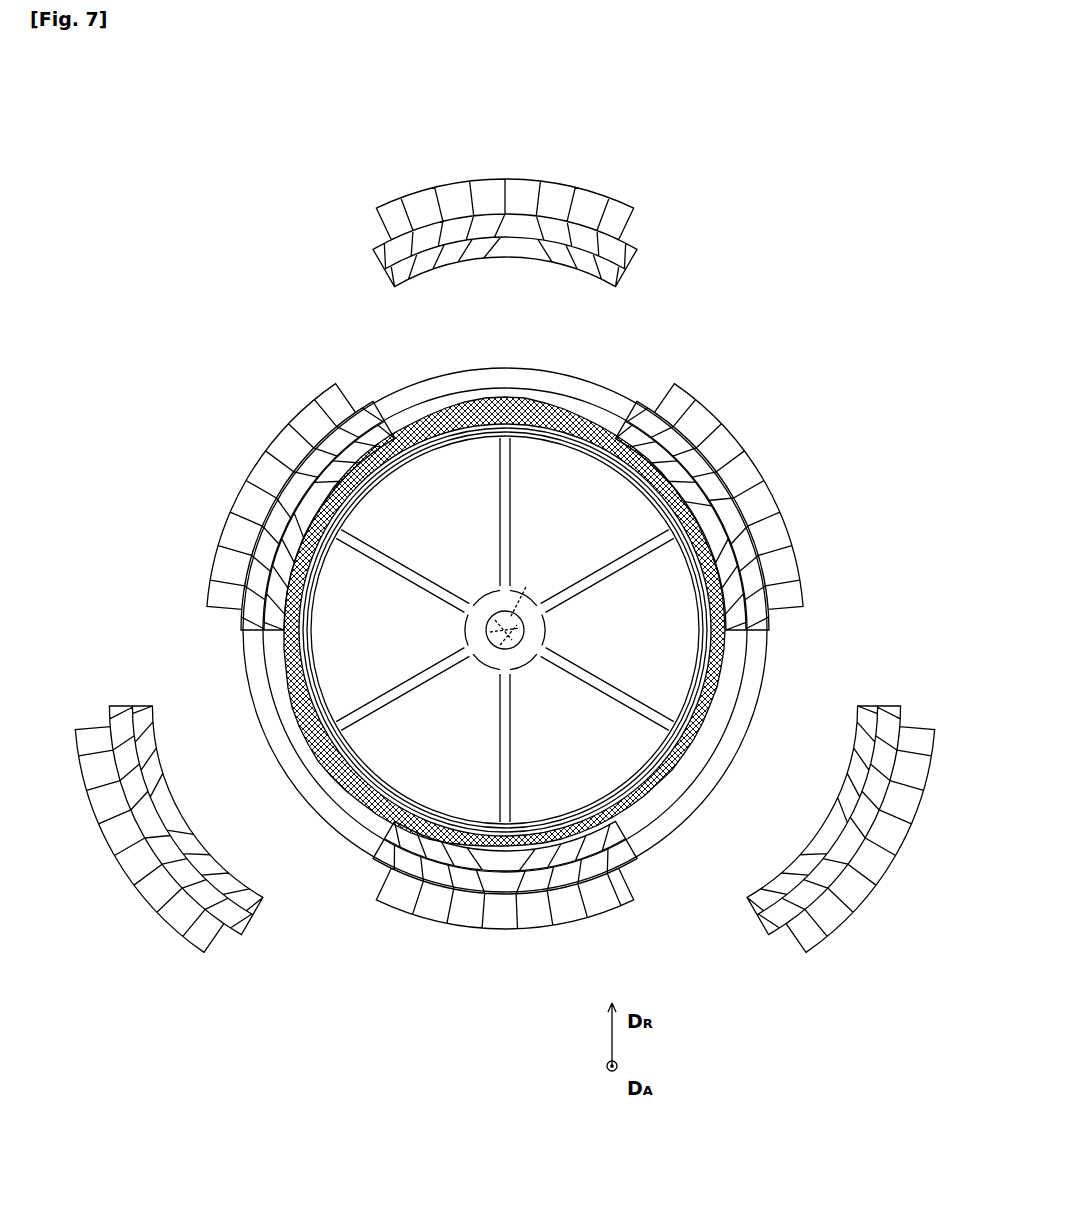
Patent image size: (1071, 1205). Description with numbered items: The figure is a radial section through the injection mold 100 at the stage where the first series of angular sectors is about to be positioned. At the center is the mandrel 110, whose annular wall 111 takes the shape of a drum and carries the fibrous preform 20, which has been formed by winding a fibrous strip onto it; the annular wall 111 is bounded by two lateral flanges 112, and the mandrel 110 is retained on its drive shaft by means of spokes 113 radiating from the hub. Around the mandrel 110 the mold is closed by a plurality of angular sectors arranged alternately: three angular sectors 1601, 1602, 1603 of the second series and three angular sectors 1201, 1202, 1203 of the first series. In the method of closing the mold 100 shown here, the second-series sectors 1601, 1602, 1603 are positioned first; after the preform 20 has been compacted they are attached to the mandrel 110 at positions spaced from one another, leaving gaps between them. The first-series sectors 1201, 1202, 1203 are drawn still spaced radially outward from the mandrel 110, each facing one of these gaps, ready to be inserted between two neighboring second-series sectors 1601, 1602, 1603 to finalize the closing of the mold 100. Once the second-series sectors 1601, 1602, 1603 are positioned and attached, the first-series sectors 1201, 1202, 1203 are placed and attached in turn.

The mold 100 is at (815, 143).
The mandrel 110 is at (405, 478).
The annular wall 111 is at (540, 425).
The lateral flanges 112 is at (338, 818).
The spokes 113 is at (505, 722).
The fibrous preform 20 is at (433, 425).
The angular sector of the second series 1601 is at (791, 495).
The angular sector of the second series 1602 is at (495, 940).
The angular sector of the second series 1603 is at (220, 522).
The angular sector of the first series 1201 is at (915, 861).
The angular sector of the first series 1202 is at (105, 872).
The angular sector of the first series 1203 is at (480, 165).